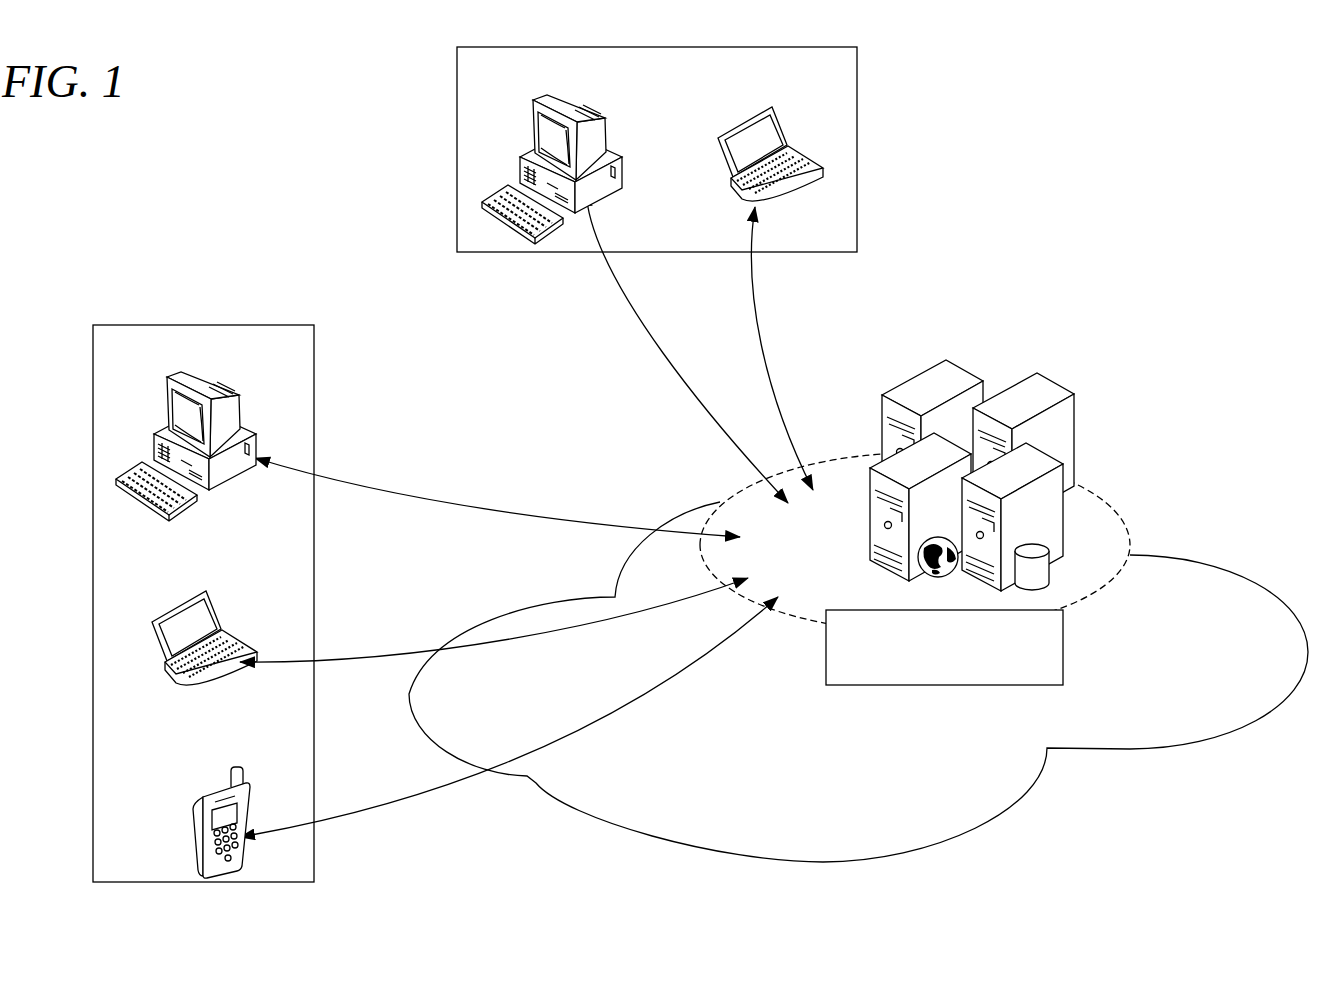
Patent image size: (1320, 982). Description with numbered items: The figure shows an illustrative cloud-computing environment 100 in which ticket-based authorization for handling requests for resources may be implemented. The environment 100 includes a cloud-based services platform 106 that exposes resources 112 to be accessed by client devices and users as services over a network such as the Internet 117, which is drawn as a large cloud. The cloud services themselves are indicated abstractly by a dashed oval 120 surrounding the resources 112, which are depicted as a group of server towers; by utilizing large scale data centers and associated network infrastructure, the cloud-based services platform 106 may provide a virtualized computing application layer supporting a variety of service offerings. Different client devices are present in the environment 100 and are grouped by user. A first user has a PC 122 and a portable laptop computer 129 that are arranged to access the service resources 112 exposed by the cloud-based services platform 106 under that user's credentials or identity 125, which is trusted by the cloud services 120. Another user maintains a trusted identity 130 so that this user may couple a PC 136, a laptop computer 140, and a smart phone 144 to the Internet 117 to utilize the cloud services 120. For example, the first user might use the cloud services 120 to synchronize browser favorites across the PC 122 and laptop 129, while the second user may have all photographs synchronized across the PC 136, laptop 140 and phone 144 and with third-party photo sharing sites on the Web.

The cloud-computing environment 100 is at (268, 170).
The cloud-based services platform 106 is at (1063, 648).
The resources 112 is at (1075, 425).
The Internet 117 is at (1233, 577).
The cloud services 120 is at (1110, 507).
The PC 122 is at (612, 138).
The identity 125 is at (857, 178).
The portable laptop computer 129 is at (780, 110).
The trusted identity 130 is at (314, 370).
The PC 136 is at (169, 409).
The laptop computer 140 is at (214, 594).
The smart phone 144 is at (192, 821).